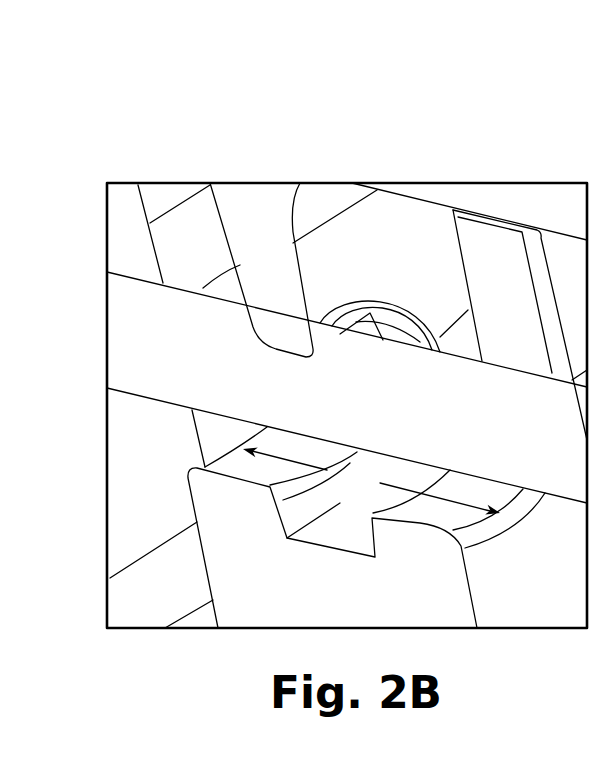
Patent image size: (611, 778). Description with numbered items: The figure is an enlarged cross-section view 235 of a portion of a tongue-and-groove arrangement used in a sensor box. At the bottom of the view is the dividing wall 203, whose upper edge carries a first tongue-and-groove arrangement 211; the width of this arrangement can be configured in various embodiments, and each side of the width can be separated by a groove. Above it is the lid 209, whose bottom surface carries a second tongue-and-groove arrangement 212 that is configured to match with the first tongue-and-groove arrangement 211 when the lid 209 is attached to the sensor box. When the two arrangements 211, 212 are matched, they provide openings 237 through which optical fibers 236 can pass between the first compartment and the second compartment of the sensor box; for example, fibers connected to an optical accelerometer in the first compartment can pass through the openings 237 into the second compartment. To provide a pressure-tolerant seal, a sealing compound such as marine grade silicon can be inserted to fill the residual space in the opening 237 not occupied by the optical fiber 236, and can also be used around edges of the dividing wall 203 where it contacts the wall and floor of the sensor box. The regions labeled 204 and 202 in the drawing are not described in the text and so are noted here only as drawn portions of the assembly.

The cross-section view 235 is at (128, 152).
The second tongue-and-groove arrangement 212 is at (497, 303).
The lid 209 is at (567, 217).
The optical fibers 236 is at (410, 409).
The openings 237 is at (371, 481).
The first tongue-and-groove arrangement 211 is at (272, 484).
The dividing wall 203 is at (420, 616).
The left lower body 204 is at (141, 493).
The right lower body 202 is at (537, 594).